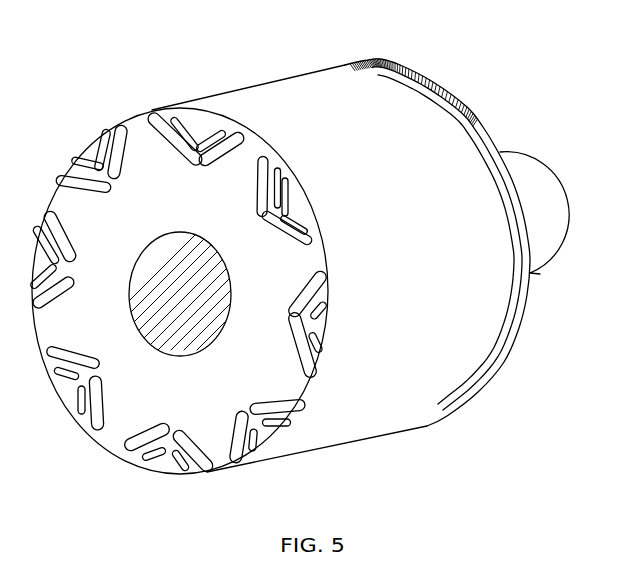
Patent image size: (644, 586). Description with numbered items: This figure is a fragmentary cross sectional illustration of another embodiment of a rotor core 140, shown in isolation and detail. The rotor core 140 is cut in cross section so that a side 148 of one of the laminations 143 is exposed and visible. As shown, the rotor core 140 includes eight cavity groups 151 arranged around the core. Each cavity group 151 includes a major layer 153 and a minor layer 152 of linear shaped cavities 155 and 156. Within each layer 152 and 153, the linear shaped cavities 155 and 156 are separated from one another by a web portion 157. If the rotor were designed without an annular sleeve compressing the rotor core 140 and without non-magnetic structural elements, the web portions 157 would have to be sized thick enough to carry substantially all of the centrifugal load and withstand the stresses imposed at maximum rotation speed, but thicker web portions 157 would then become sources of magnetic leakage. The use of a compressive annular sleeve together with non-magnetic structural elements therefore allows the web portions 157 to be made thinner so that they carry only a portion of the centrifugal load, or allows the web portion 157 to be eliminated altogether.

The rotor core 140 is at (298, 74).
The laminations 143 is at (150, 112).
The side 148 is at (141, 125).
The cavity groups 151 is at (323, 182).
The minor layer 152 is at (310, 222).
The major layer 153 is at (318, 242).
The linear shaped cavities 155 is at (283, 232).
The linear shaped cavities 156 is at (259, 178).
The web portion 157 is at (263, 223).